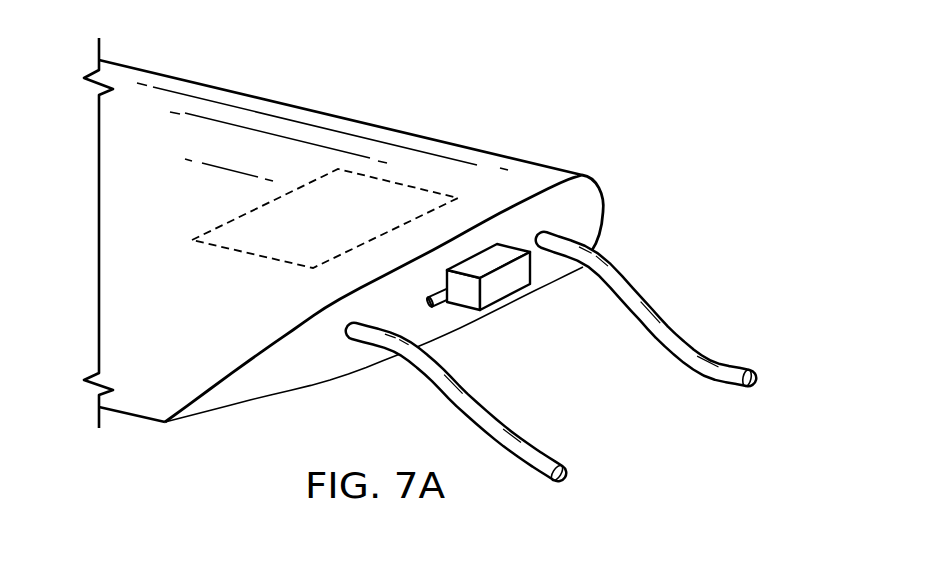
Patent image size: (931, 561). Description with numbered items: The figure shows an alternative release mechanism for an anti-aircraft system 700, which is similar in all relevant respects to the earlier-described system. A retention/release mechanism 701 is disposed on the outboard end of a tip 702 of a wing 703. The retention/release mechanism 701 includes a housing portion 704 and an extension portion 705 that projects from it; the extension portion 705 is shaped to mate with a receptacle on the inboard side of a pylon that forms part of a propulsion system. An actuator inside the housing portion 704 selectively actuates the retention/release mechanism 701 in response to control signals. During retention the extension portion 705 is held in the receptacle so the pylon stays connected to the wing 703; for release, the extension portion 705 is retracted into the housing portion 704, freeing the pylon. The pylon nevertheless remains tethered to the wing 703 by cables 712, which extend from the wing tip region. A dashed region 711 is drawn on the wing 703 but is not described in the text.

The anti-aircraft system 700 is at (581, 114).
The retention/release mechanism 701 is at (525, 300).
The tip 702 is at (587, 202).
The wing 703 is at (318, 112).
The housing portion 704 is at (521, 276).
The extension portion 705 is at (441, 306).
The embedded component region (hidden) 711 is at (247, 254).
The cables 712 is at (684, 332).